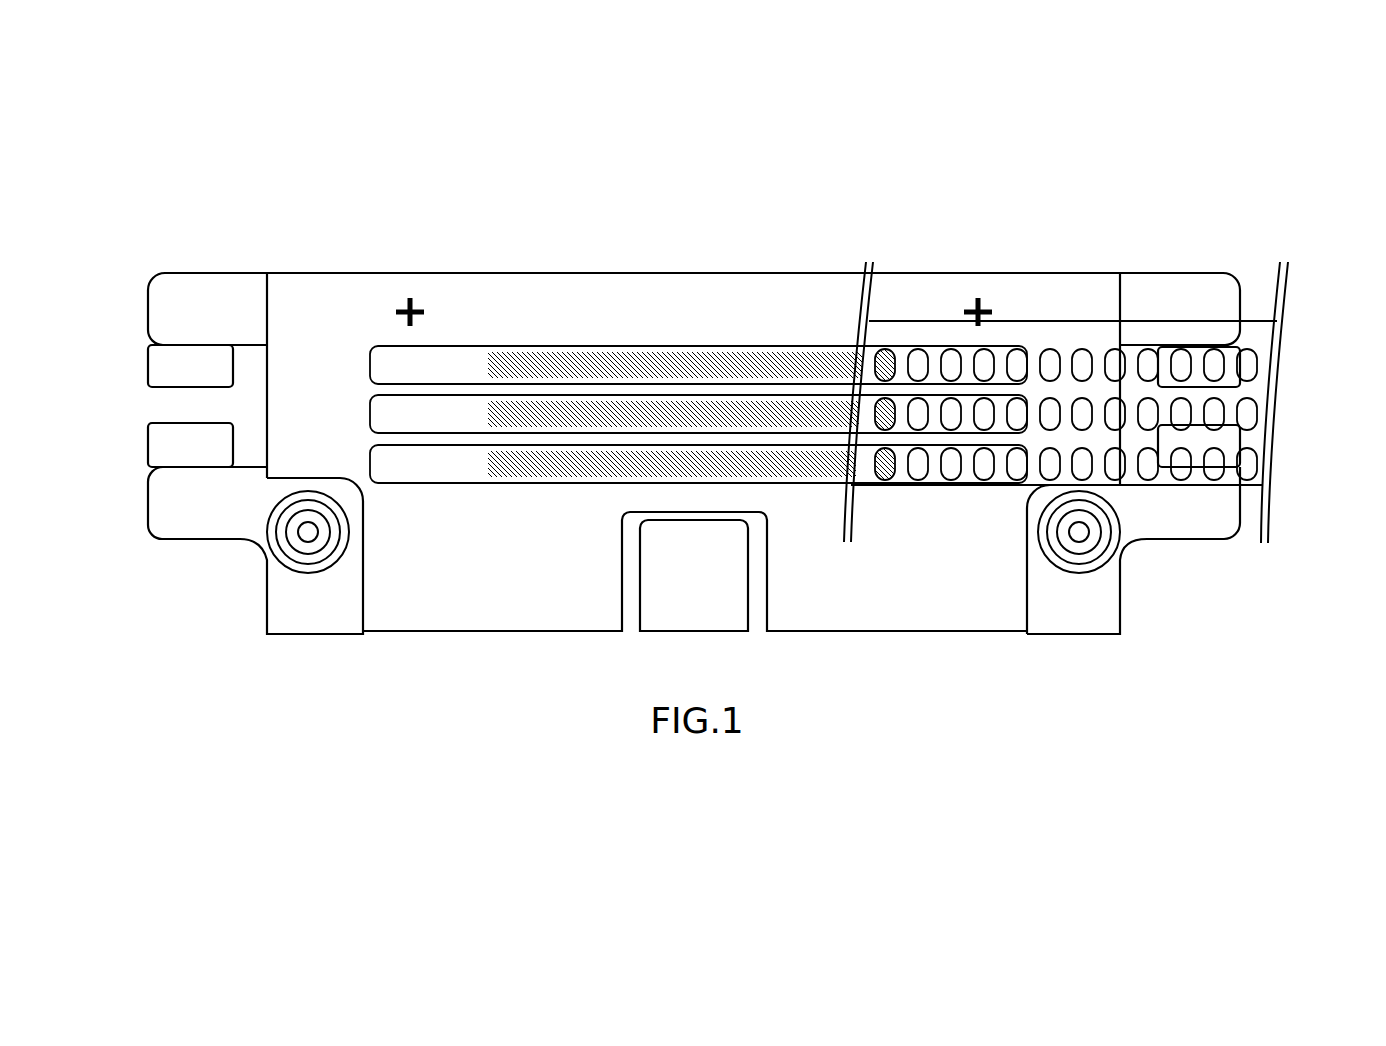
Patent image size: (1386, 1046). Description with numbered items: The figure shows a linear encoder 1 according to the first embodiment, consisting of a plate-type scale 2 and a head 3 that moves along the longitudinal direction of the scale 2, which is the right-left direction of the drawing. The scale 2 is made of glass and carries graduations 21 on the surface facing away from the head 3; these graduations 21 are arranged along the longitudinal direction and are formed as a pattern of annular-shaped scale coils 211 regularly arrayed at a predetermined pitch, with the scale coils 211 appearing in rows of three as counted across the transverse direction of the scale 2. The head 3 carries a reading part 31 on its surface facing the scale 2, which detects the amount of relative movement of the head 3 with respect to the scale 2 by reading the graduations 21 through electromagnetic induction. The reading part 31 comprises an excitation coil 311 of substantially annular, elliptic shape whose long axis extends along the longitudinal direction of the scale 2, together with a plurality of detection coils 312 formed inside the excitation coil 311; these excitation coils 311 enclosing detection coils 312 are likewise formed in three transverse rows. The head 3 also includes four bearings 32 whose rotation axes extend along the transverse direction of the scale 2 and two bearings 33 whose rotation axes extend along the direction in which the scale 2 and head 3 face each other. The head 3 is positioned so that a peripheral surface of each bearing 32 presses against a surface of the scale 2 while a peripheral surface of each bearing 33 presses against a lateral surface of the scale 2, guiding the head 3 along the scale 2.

The linear encoder 1 is at (970, 150).
The scale 2 is at (1253, 327).
The graduations 21 is at (1123, 414).
The scale coils 211 is at (1258, 402).
The head 3 is at (632, 267).
The reading part 31 is at (538, 340).
The excitation coil 311 is at (372, 382).
The detection coils 312 is at (655, 357).
The bearings 32 is at (157, 432).
The bearings 33 is at (297, 573).